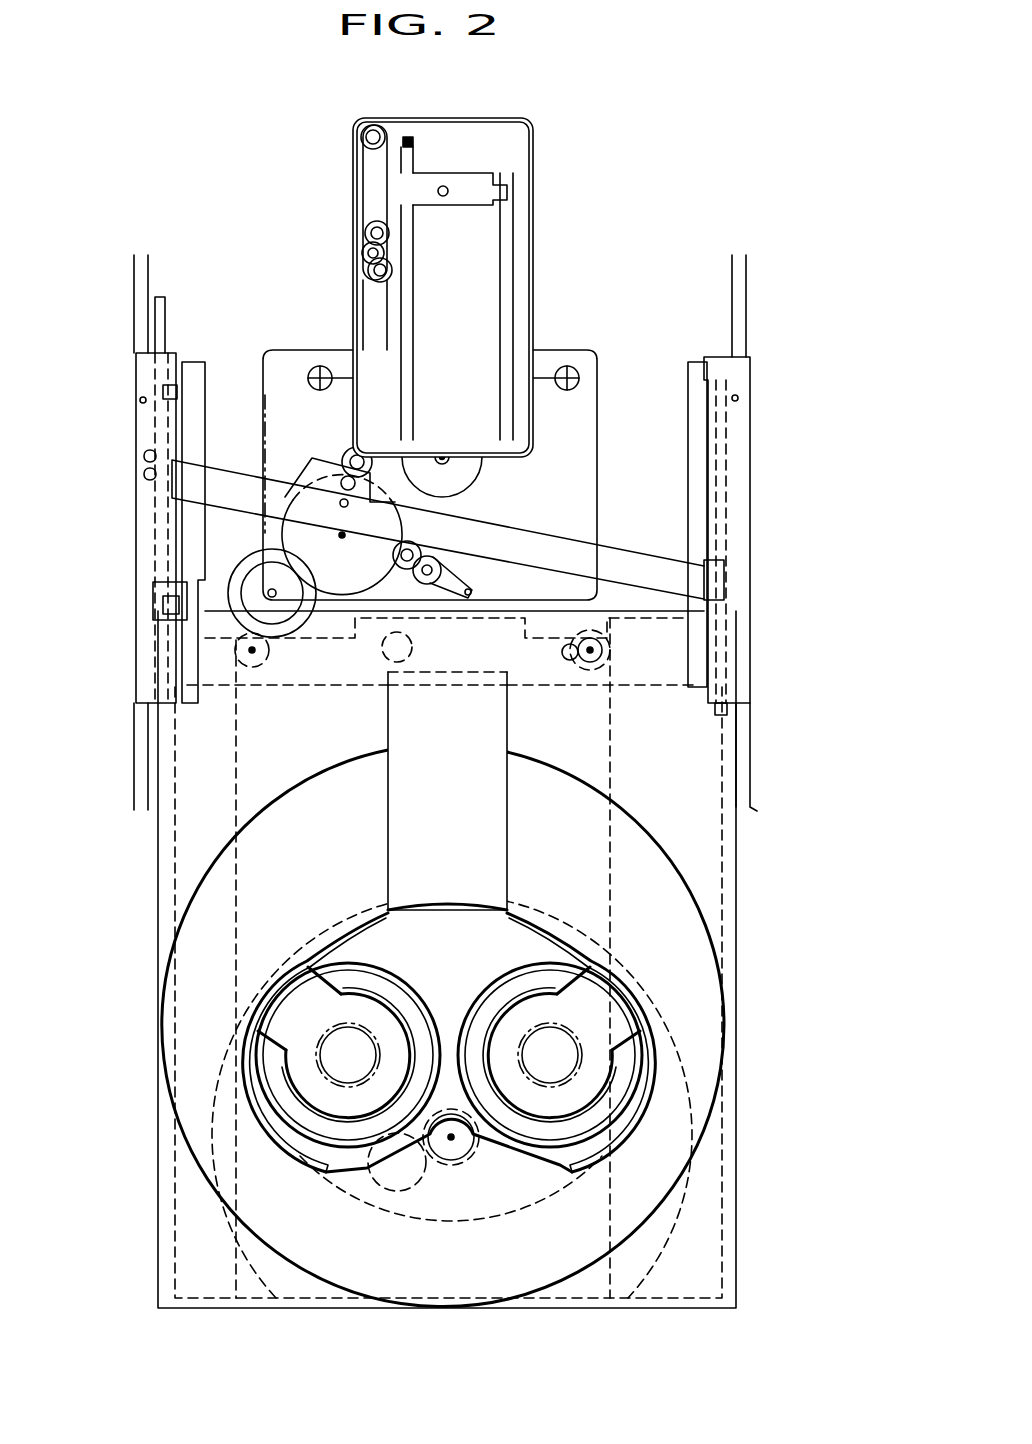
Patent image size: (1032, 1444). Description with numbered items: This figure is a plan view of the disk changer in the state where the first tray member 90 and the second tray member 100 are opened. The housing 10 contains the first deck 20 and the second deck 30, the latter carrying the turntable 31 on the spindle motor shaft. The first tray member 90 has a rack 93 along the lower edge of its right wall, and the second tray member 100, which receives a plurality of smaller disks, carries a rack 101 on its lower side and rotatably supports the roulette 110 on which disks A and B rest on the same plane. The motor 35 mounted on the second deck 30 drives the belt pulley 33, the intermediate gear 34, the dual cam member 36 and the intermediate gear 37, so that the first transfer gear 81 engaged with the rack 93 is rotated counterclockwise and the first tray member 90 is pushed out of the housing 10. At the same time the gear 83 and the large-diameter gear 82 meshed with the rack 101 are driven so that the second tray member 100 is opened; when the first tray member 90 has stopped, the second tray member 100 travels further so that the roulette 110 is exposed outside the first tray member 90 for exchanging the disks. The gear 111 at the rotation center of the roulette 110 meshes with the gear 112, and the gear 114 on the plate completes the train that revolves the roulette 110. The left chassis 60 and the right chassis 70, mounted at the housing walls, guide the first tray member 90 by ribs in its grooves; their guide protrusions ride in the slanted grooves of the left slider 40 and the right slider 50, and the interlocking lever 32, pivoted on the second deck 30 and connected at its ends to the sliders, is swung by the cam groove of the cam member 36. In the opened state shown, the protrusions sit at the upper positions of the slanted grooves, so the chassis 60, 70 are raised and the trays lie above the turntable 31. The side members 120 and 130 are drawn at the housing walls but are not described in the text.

The housing 10 is at (744, 312).
The first deck 20 is at (536, 152).
The second deck 30 is at (592, 355).
The turntable 31 is at (440, 434).
The interlocking lever 32 is at (625, 548).
The belt pulley 33 is at (424, 585).
The intermediate gear 34 is at (412, 545).
The motor 35 is at (474, 562).
The dual cam member 36 is at (283, 540).
The intermediate gear 37 is at (243, 603).
The left slider 40 is at (725, 458).
The right slider 50 is at (170, 290).
The left chassis 60 is at (692, 355).
The right chassis 70 is at (202, 355).
The first transfer gear 81 is at (248, 664).
The gear 82 is at (612, 646).
The gear 83 is at (572, 655).
The first tray member 90 is at (745, 888).
The rack 93 is at (252, 806).
The second tray member 100 is at (736, 1222).
The rack 101 is at (614, 832).
The roulette 110 is at (560, 1195).
The gear 111 is at (452, 1165).
The gear 112 is at (392, 1192).
The gear 114 is at (240, 706).
The rail housing 120 is at (750, 380).
The rail housing 130 is at (140, 372).
The disk A is at (262, 1022).
The disk B is at (645, 1008).